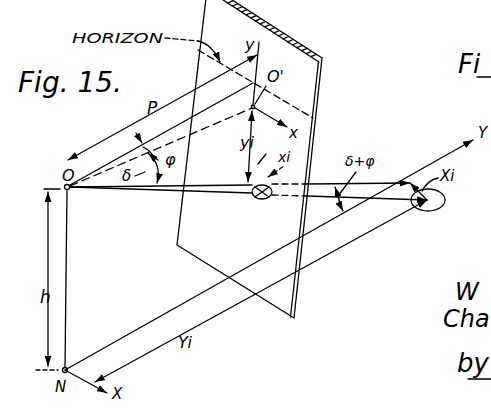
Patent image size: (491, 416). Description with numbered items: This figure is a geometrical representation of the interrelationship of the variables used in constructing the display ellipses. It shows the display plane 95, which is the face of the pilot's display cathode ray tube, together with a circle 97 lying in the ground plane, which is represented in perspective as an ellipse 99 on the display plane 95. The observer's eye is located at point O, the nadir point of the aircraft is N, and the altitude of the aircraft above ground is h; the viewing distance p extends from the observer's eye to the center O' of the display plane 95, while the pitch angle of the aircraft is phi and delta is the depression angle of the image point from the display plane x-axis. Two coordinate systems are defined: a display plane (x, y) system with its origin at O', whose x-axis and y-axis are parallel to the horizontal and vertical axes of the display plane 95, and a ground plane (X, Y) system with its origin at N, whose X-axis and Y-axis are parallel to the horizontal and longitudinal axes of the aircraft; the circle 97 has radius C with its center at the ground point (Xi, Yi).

The display plane 95 is at (319, 107).
The circle 97 is at (430, 211).
The ellipse 99 is at (265, 200).